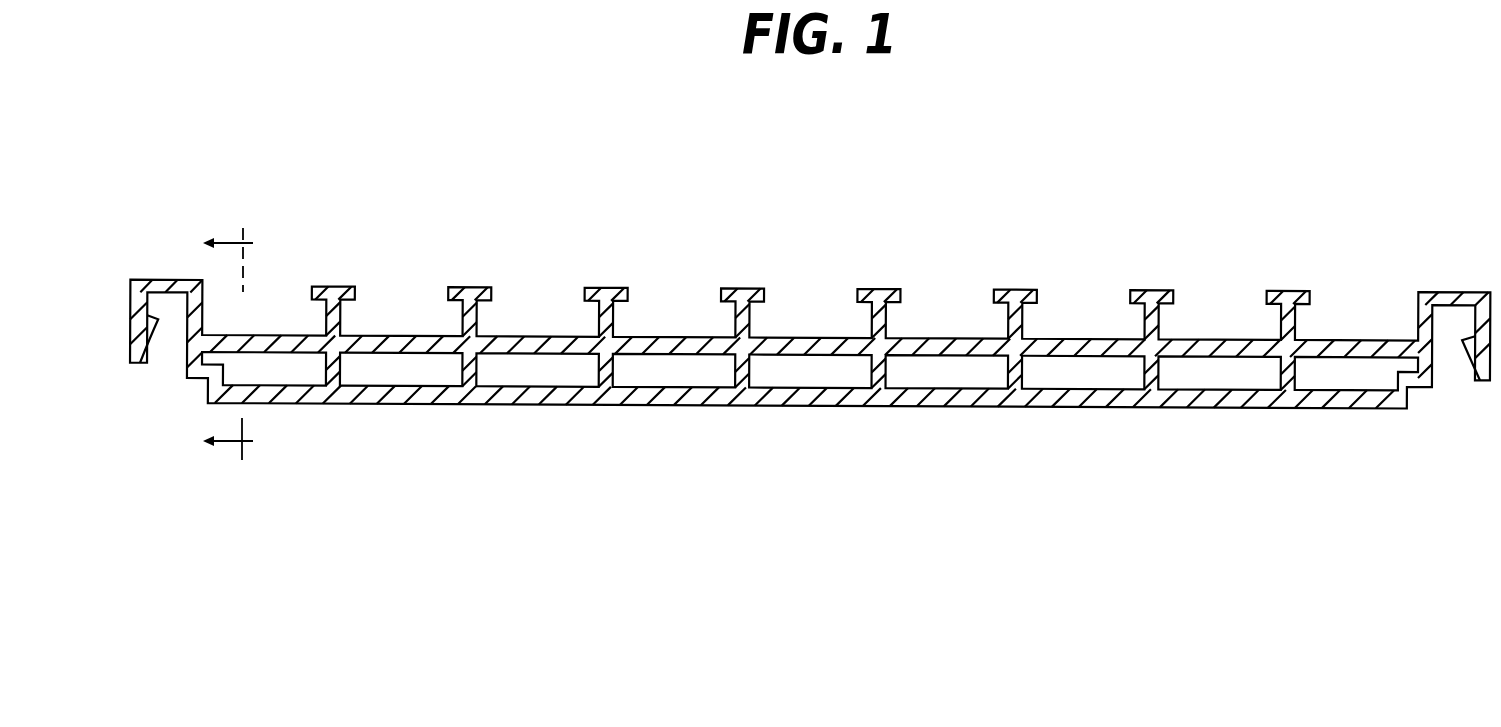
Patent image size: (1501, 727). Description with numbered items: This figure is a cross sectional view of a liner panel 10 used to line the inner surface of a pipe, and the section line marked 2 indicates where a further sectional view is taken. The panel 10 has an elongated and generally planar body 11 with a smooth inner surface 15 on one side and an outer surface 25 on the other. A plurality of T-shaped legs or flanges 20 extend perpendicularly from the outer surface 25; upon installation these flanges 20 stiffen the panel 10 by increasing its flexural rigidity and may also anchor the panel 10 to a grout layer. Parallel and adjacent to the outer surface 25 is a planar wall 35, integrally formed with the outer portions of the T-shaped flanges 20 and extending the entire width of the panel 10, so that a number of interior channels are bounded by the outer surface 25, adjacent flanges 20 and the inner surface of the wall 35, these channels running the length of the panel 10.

The panel 10 is at (1380, 254).
The body 11 is at (395, 404).
The inner surface 15 is at (465, 405).
The T-shaped legs or flanges 20 is at (492, 300).
The outer surface 25 is at (1075, 405).
The planar wall 35 is at (762, 347).
The section line 2- 2 is at (210, 342).